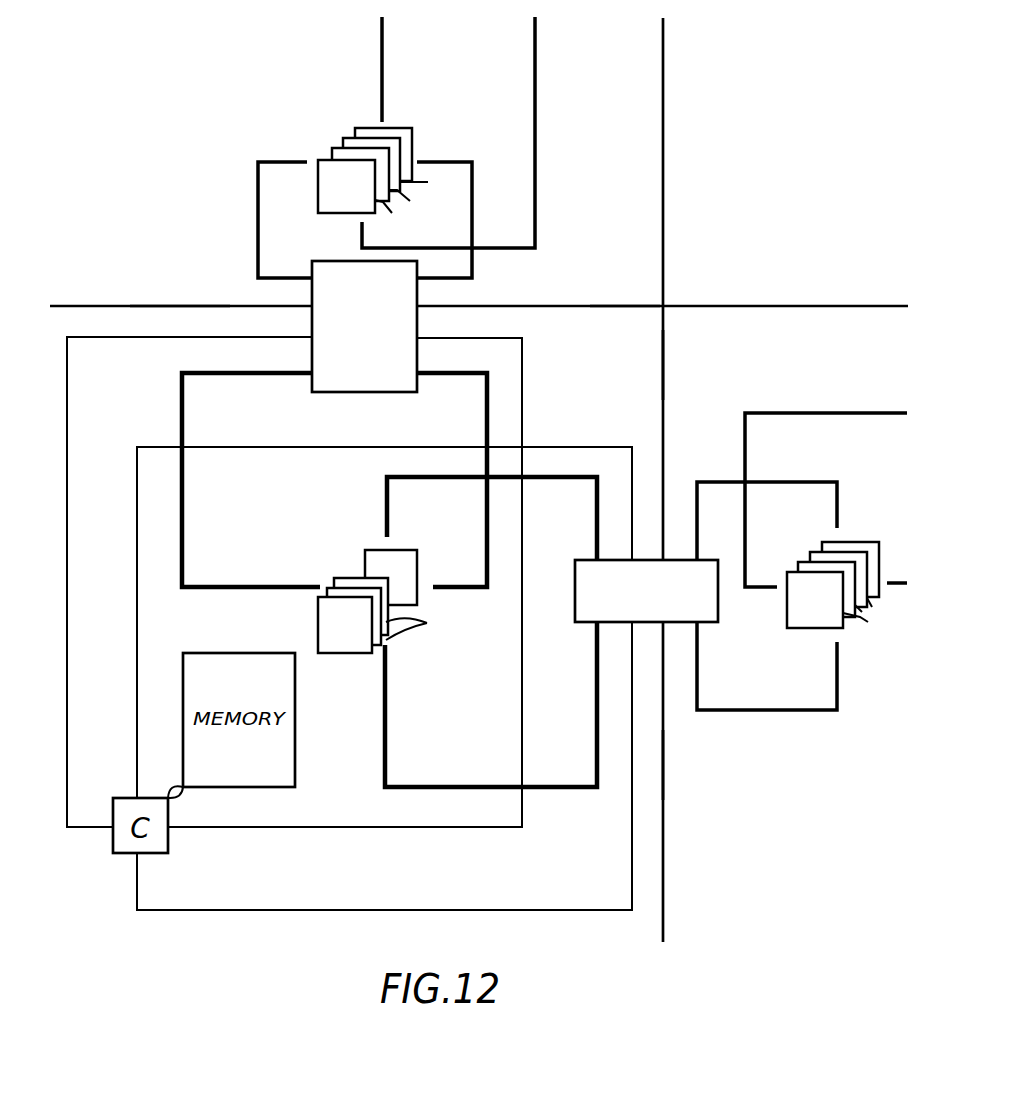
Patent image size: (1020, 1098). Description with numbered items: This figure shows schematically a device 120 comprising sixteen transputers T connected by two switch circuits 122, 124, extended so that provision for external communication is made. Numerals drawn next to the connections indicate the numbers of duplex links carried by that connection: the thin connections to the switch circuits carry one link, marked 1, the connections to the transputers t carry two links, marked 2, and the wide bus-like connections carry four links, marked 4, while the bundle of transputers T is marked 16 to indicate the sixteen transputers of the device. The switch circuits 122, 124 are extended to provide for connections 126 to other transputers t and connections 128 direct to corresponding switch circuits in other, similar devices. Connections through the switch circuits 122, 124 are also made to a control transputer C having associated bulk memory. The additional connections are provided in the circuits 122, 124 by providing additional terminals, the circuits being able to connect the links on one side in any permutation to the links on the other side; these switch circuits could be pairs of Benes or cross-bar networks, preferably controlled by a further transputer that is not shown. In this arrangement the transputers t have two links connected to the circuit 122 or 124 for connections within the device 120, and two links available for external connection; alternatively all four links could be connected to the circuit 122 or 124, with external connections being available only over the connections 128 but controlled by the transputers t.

The control lines 1 is at (349, 610).
The trunk cables 2 is at (570, 363).
The links 4 is at (409, 539).
The transceivers 16 is at (374, 578).
The device 120 is at (708, 793).
The switch circuit 122 is at (364, 344).
The switch circuit 124 is at (626, 612).
The connections 126 is at (184, 410).
The connections 128 is at (682, 42).